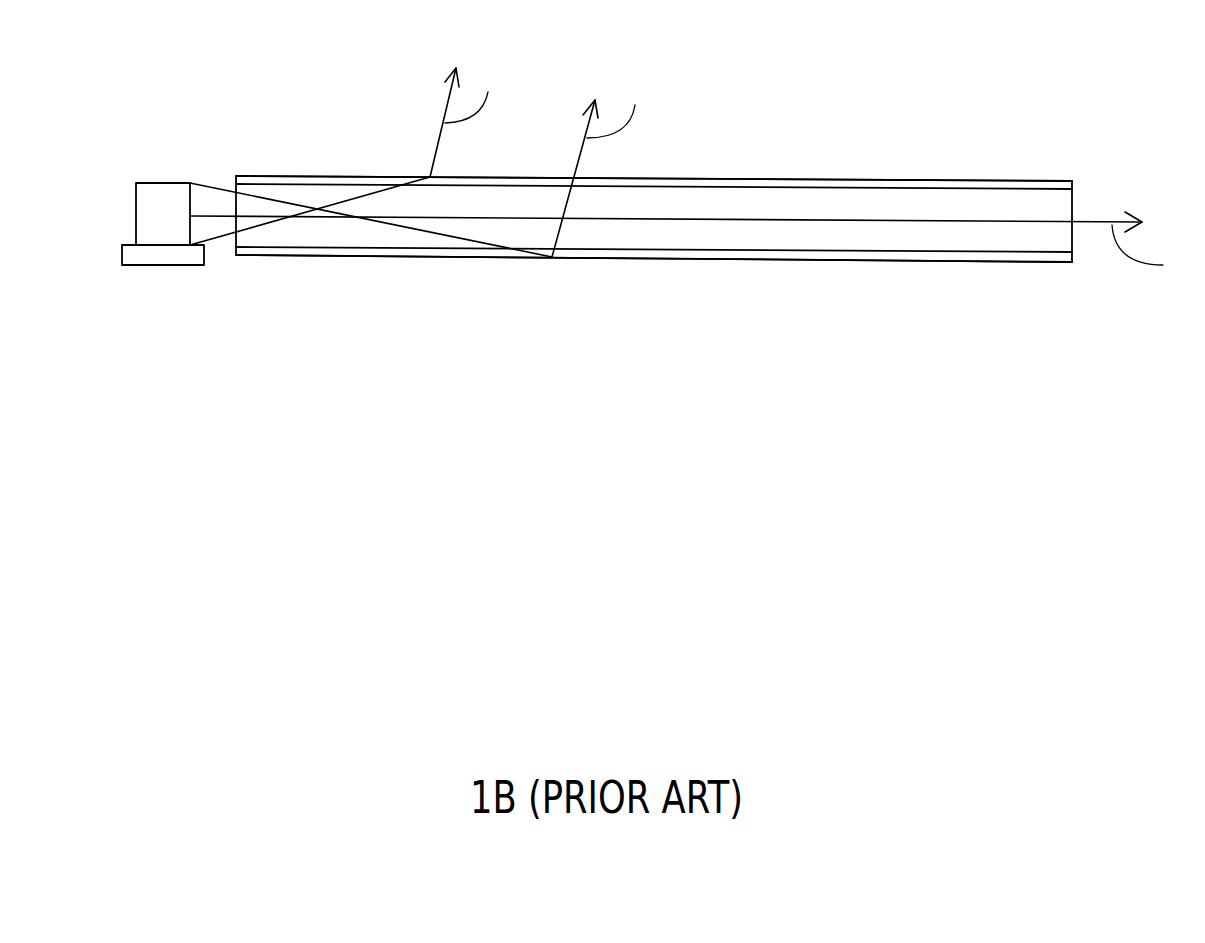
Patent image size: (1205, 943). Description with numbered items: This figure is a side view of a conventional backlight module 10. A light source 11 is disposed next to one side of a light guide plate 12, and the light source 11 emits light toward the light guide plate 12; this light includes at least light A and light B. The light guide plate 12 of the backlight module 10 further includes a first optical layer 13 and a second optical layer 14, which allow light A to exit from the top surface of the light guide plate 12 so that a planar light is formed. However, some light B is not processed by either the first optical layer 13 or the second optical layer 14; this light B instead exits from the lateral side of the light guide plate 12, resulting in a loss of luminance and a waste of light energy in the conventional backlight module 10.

The backlight module 10 is at (150, 59).
The light source 11 is at (148, 215).
The light guide plate 12 is at (810, 285).
The first optical layer 13 is at (1048, 188).
The second optical layer 14 is at (1018, 257).